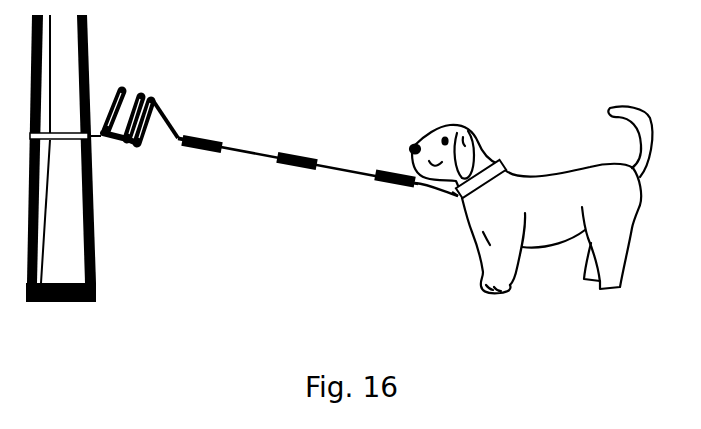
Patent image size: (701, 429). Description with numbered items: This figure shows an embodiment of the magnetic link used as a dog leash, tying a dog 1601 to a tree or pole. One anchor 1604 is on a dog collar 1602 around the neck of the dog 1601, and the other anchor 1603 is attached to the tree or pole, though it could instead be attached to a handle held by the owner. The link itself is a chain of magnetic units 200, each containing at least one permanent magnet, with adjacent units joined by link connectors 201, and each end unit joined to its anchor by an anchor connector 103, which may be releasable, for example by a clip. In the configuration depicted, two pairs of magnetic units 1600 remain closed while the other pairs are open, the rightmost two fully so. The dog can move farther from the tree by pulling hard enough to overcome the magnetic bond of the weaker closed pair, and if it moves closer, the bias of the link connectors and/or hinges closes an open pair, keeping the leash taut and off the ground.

The anchor connector 103 is at (432, 186).
The magnetic unit 200 is at (298, 111).
The link connector 201 is at (298, 196).
The pairs of magnetic units 1600 is at (259, 147).
The dog 1601 is at (516, 114).
The dog collar 1602 is at (502, 168).
The anchor 1603 is at (101, 135).
The anchor 1604 is at (453, 195).